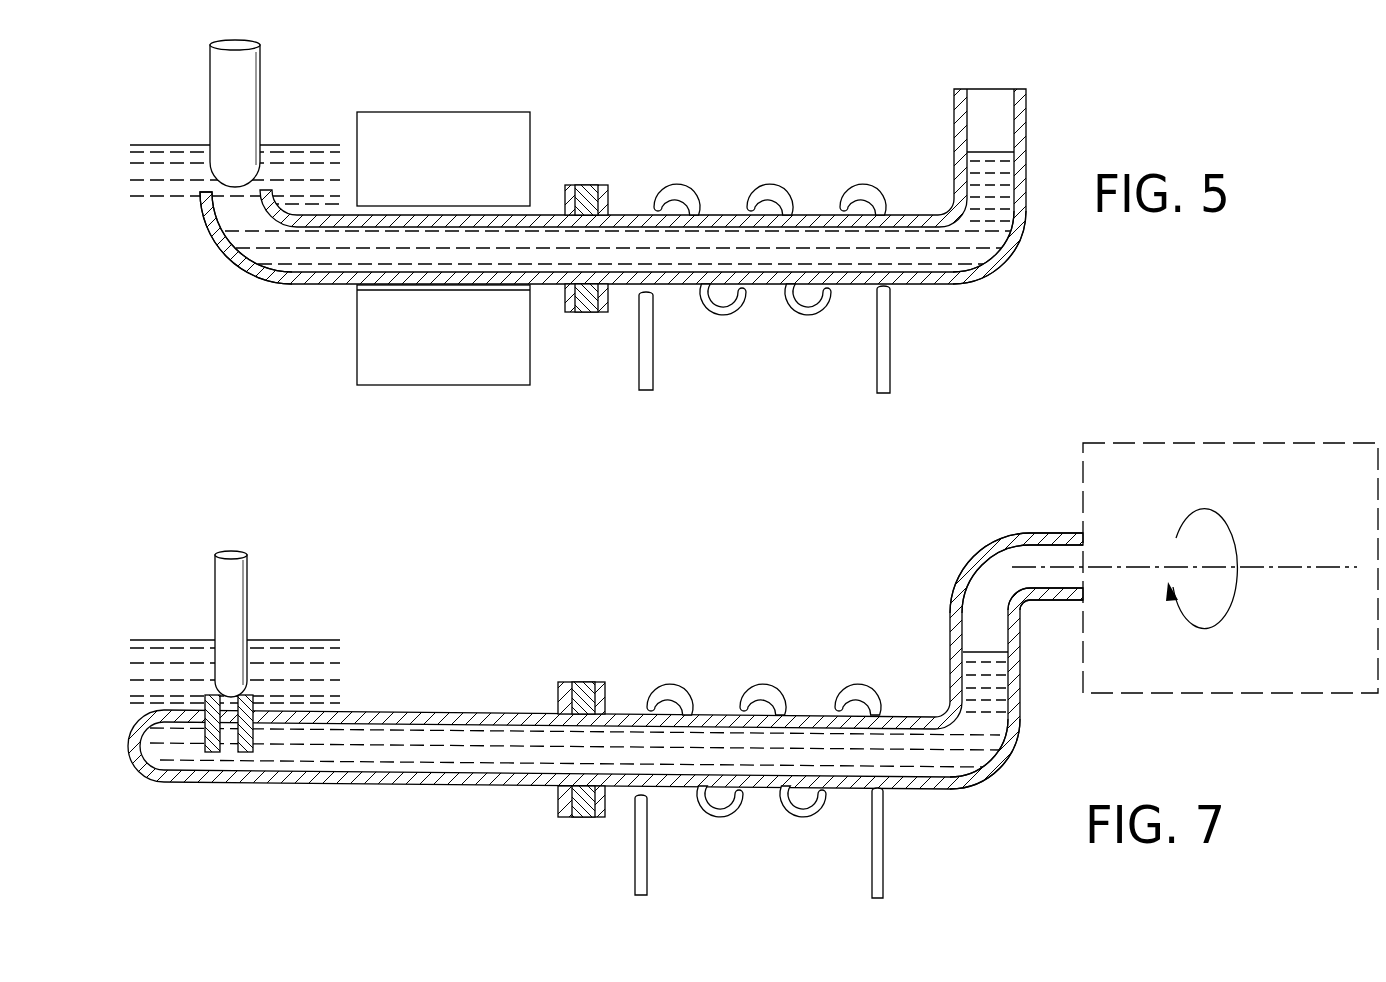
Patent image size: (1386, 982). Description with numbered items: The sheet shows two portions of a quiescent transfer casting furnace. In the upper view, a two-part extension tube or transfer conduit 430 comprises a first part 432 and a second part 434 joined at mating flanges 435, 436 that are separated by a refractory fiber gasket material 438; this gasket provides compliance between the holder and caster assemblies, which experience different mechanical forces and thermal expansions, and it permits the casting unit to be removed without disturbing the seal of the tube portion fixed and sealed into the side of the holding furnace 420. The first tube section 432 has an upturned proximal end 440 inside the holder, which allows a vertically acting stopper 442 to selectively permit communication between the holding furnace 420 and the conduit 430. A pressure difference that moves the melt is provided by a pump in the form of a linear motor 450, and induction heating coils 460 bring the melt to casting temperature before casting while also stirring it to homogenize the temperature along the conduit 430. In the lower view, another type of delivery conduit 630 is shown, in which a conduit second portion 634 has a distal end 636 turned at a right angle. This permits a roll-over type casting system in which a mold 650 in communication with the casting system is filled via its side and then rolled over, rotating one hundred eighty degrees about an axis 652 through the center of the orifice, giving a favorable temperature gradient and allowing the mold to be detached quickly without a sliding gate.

In FIG. 5, the holding furnace 420 is at (302, 114).
In FIG. 5, the transfer conduit 430 is at (723, 172).
In FIG. 5, the first part 432 is at (283, 278).
In FIG. 5, the second part 434 is at (937, 281).
In FIG. 5, the mating flange 435 is at (569, 206).
In FIG. 5, the mating flange 436 is at (609, 203).
In FIG. 5, the refractory fiber gasket material 438 is at (586, 190).
In FIG. 5, the upturned proximal end 440 is at (210, 183).
In FIG. 5, the vertically acting stopper 442 is at (218, 80).
In FIG. 5, the linear motor 450 is at (450, 111).
In FIG. 5, the induction heating coils 460 is at (880, 372).
In FIG. 7, the delivery conduit 630 is at (422, 686).
In FIG. 7, the conduit second portion 634 is at (915, 784).
In FIG. 7, the distal end 636 is at (1043, 534).
In FIG. 7, the mold 650 is at (1230, 443).
In FIG. 7, the axis 652 is at (1267, 566).